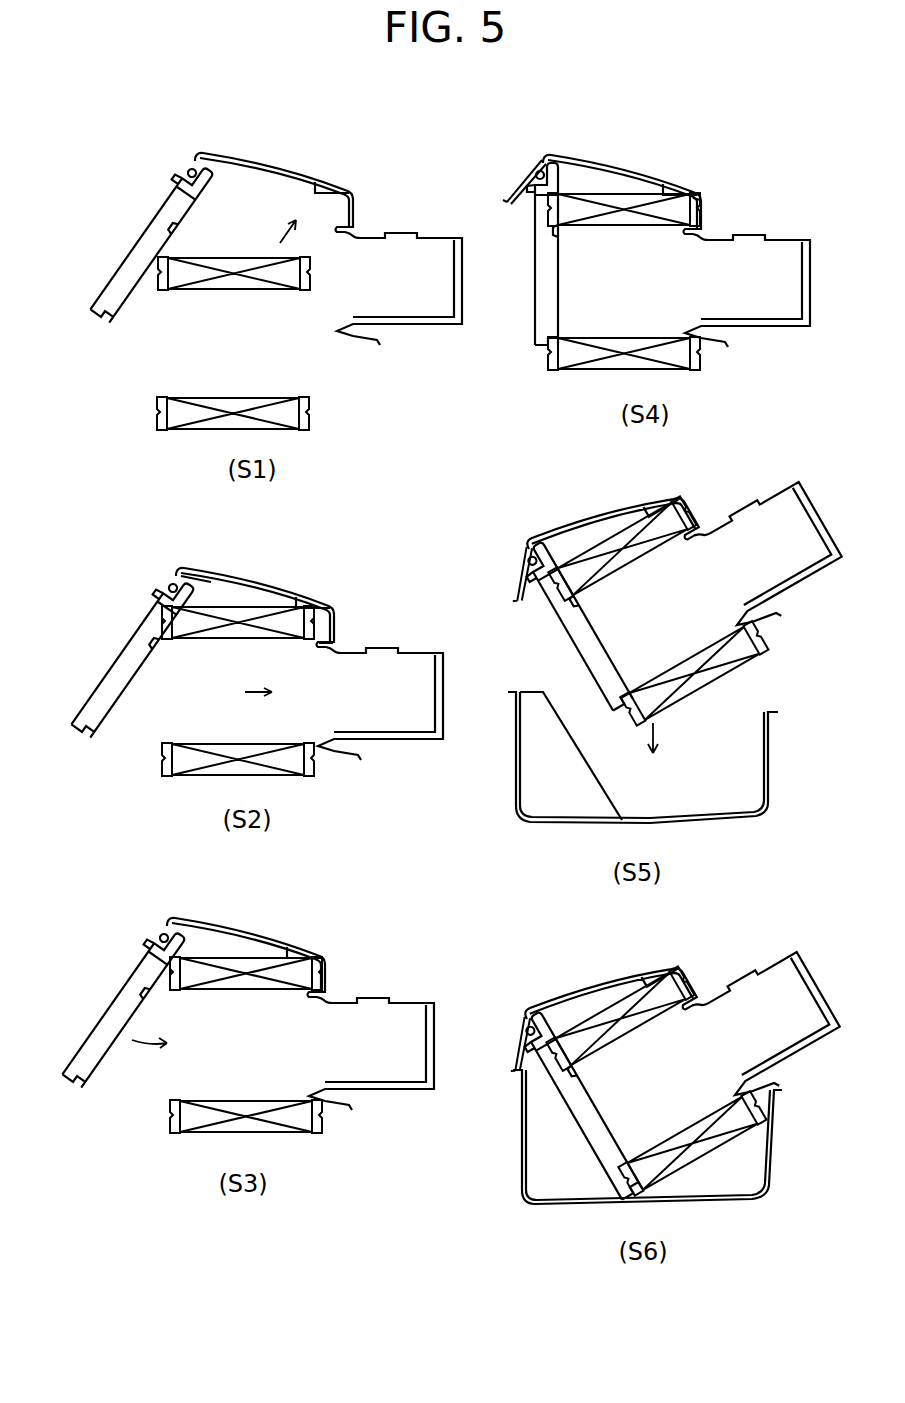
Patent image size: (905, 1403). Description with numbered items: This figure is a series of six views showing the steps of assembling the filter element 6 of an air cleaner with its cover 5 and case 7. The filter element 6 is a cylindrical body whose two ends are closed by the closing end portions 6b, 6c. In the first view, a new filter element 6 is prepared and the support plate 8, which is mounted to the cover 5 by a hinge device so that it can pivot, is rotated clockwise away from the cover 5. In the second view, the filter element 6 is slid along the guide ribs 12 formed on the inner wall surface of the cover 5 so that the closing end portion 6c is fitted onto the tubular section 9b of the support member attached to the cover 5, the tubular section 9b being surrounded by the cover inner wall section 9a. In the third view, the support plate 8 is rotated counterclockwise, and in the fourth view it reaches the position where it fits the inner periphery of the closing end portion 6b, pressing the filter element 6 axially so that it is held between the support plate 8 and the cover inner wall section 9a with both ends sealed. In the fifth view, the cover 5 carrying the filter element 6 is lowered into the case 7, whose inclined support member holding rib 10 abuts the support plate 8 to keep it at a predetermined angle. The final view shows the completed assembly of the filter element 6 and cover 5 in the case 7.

The cover 5 is at (353, 228).
The filter element 6 is at (258, 285).
The closing end portion 6b is at (165, 641).
The closing end portion 6c is at (307, 640).
The case 7 is at (710, 820).
The support plate 8 is at (123, 275).
The cover inner wall section 9a is at (700, 195).
The tubular section 9b is at (322, 657).
The support member holding rib 10 is at (558, 790).
The guide ribs 12 is at (197, 576).